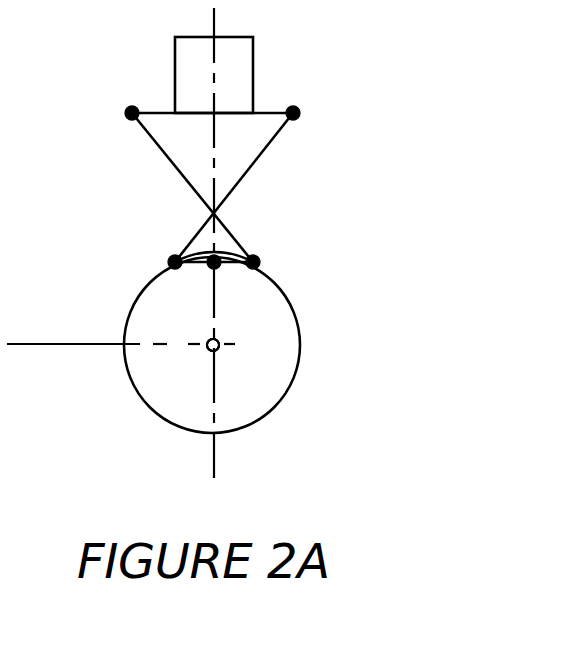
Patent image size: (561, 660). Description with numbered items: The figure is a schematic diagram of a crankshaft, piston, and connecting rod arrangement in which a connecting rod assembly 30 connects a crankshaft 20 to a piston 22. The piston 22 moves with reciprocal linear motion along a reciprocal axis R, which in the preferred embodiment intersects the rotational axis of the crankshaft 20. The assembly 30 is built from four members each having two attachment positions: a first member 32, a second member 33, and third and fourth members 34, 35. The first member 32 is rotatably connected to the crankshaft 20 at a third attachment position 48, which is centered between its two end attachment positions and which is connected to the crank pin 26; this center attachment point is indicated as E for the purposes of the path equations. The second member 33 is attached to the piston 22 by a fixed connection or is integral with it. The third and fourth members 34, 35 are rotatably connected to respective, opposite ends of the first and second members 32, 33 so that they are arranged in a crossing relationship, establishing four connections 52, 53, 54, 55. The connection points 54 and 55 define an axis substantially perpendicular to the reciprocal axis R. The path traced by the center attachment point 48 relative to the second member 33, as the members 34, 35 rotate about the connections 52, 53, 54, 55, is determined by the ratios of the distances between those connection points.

The crankshaft 20 is at (273, 392).
The piston 22 is at (187, 66).
The crank pin 26 is at (220, 268).
The third attachment position 48 is at (213, 345).
The connecting rod assembly 30 is at (150, 233).
The first member 32 is at (195, 268).
The second member 33 is at (198, 116).
The third member 34 is at (172, 166).
The fourth member 35 is at (254, 165).
The connection 52 is at (175, 262).
The connection 53 is at (255, 261).
The connection 54 is at (132, 113).
The connection 55 is at (297, 110).
The center attachment point E is at (227, 252).
The reciprocal axis R is at (217, 458).